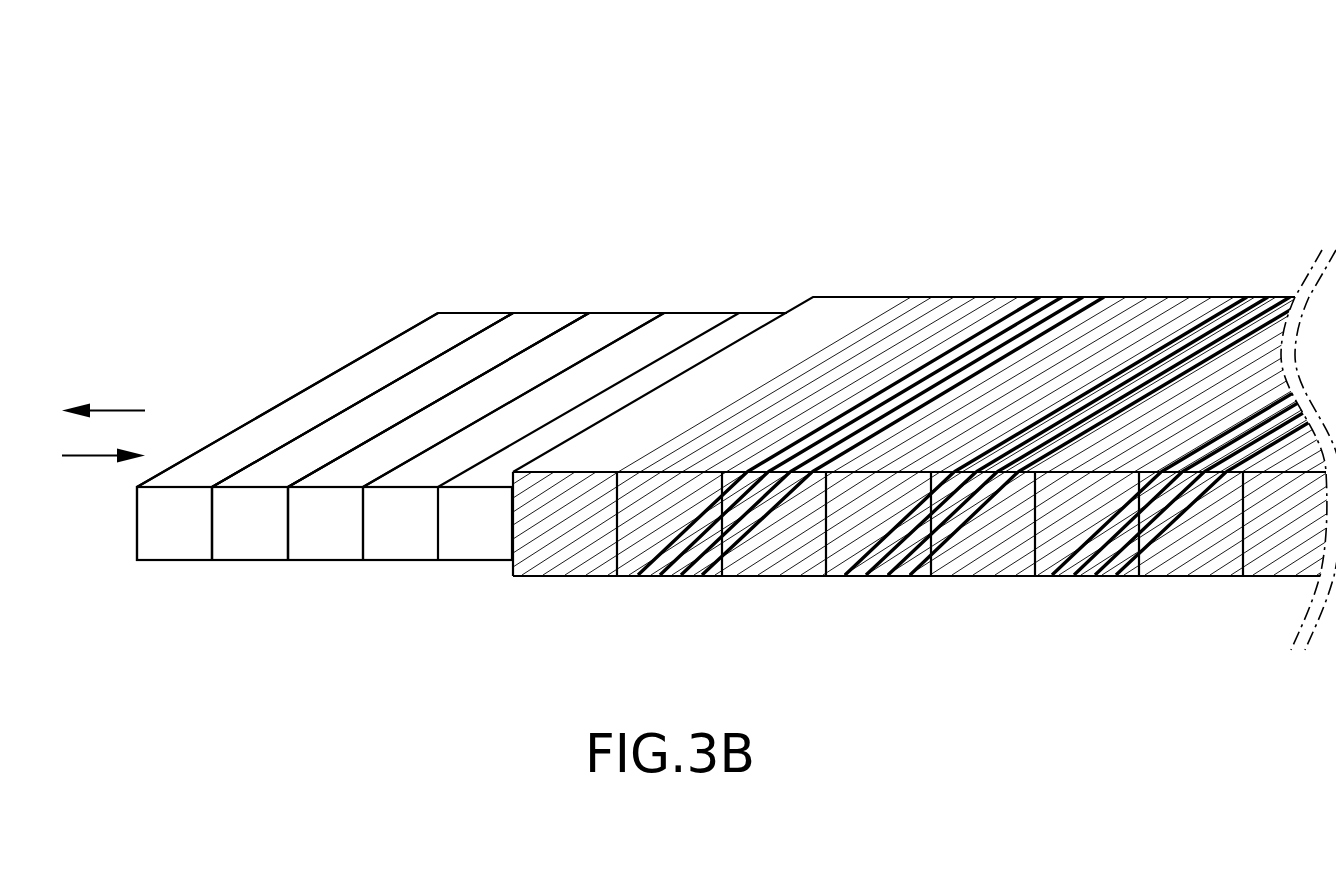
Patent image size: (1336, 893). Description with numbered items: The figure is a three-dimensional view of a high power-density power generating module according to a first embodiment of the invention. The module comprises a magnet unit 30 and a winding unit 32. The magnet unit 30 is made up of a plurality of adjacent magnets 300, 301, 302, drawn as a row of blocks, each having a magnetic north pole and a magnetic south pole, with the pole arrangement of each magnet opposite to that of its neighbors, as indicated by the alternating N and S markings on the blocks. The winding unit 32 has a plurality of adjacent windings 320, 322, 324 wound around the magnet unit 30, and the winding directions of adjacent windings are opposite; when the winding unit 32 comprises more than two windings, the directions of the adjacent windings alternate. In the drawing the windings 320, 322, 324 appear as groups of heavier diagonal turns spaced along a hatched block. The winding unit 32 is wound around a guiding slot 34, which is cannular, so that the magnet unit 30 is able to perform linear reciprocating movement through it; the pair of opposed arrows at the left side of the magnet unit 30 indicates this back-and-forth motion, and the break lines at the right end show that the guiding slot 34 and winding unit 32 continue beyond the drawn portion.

The magnet unit 30 is at (428, 147).
The magnet 300 is at (457, 325).
The magnet 301 is at (531, 325).
The magnet 302 is at (606, 325).
The winding unit 32 is at (933, 120).
The winding 320 is at (962, 297).
The winding 322 is at (1037, 297).
The winding 324 is at (1112, 297).
The guiding slot 34 is at (848, 311).